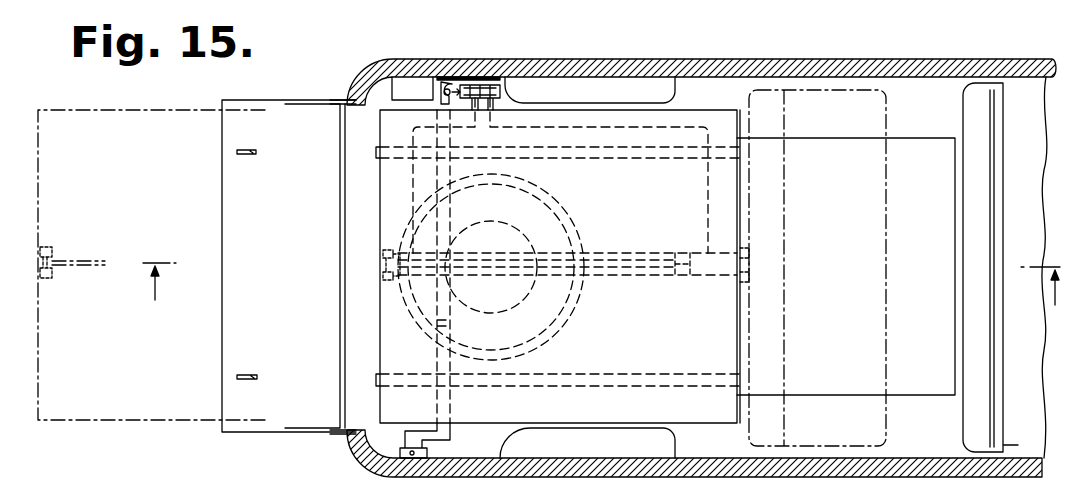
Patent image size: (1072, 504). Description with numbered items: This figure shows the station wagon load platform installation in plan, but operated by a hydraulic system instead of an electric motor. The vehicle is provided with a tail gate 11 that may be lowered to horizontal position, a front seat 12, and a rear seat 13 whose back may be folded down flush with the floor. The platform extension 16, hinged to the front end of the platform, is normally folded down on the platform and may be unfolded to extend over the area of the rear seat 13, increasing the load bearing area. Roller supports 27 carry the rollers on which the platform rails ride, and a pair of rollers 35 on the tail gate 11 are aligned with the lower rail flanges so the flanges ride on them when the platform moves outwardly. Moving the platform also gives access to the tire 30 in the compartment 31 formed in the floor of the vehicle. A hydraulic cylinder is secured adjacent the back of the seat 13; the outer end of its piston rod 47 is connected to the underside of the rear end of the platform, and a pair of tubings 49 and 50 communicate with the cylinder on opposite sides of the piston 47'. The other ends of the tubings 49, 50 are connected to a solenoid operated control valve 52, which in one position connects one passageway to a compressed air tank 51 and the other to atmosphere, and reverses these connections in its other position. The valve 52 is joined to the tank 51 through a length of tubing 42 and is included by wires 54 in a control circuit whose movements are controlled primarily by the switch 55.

The tail gate 11 is at (228, 331).
The front seat 12 is at (988, 229).
The rear seat 13 is at (886, 423).
The platform extension 16 is at (605, 298).
The roller supports 27 is at (643, 160).
The tire 30 is at (548, 203).
The compartment 31 is at (562, 222).
The rollers 35 is at (243, 155).
The tubing 42 is at (455, 84).
The piston 47 is at (560, 281).
The piston 47' is at (688, 282).
The tubing 49 is at (411, 180).
The tubing 50 is at (707, 213).
The compressed air tank 51 is at (416, 84).
The solenoid operated control valve 52 is at (494, 84).
The wires 54 is at (452, 325).
The switch 55 is at (430, 453).